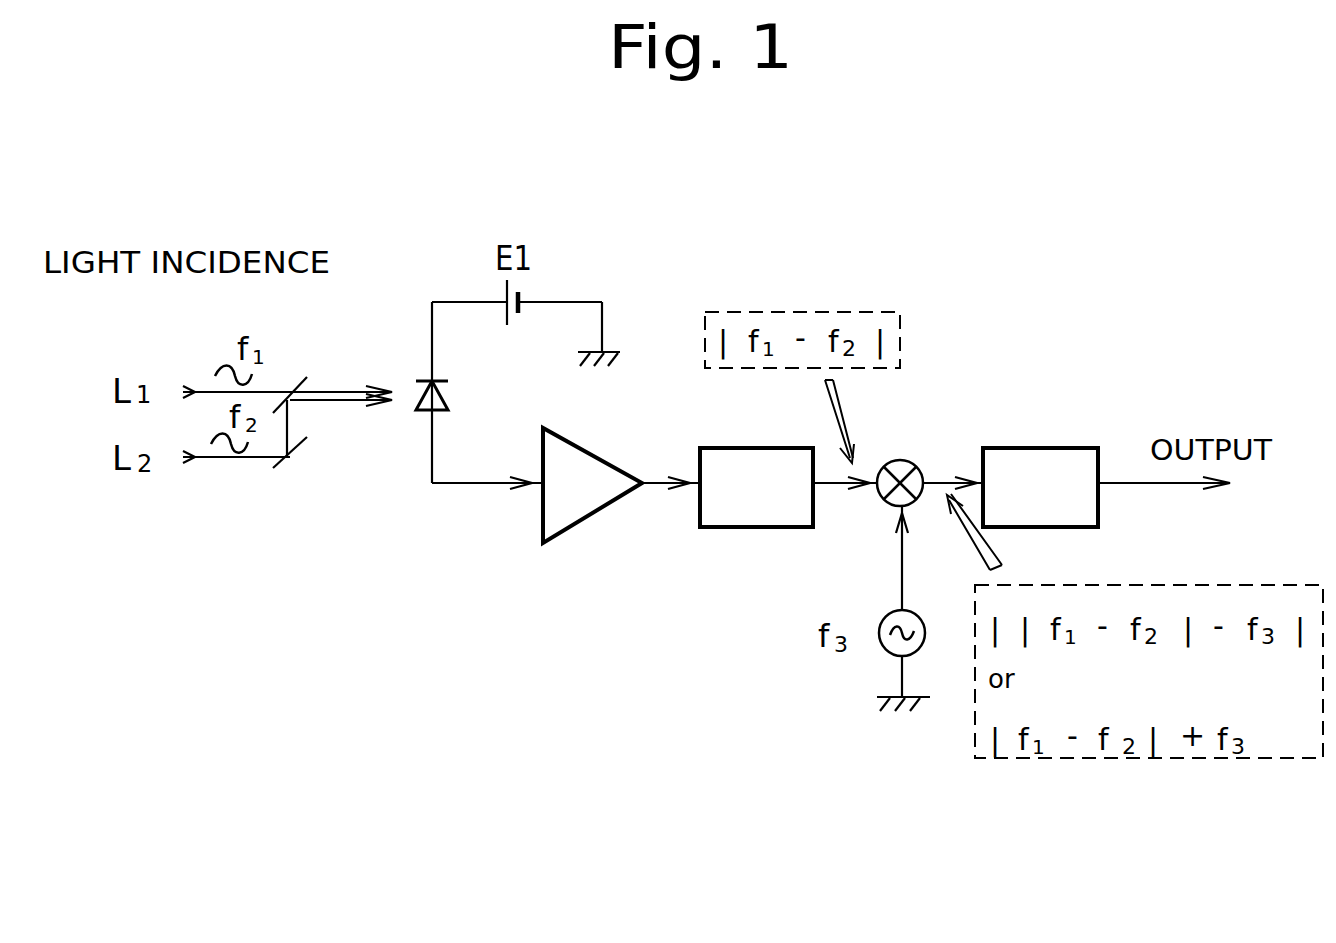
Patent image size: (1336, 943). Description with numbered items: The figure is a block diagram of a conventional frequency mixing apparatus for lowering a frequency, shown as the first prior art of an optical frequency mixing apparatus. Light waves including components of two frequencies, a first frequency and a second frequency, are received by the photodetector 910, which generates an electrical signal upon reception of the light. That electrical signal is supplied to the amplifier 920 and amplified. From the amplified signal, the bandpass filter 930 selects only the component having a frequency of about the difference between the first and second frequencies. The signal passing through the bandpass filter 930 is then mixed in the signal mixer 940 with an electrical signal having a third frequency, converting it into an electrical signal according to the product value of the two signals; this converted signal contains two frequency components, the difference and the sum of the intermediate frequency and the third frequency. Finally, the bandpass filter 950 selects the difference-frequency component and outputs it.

The photodetector 910 is at (428, 373).
The amplifier 920 is at (587, 517).
The bandpass filter 930 is at (755, 527).
The signal mixer 940 is at (924, 470).
The bandpass filter 950 is at (1083, 448).